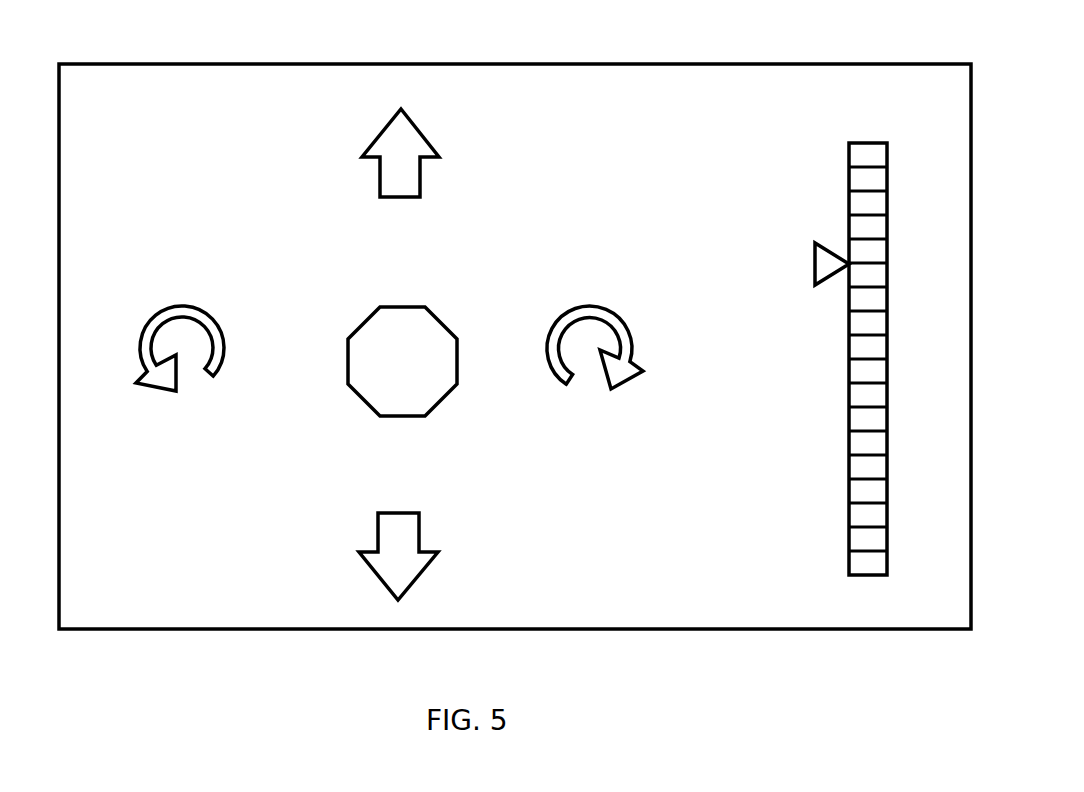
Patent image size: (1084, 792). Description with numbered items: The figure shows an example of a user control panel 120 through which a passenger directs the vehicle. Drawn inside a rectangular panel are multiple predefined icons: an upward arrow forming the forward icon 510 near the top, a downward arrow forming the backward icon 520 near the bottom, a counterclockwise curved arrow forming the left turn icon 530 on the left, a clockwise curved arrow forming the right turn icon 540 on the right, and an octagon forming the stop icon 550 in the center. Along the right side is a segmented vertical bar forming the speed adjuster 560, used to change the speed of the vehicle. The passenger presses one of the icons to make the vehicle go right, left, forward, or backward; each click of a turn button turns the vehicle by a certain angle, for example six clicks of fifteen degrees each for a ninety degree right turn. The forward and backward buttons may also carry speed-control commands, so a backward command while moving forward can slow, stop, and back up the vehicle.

The user control panel 120 is at (832, 63).
The forward icon 510 is at (446, 172).
The backward icon 520 is at (437, 538).
The left turn icon 530 is at (158, 400).
The right turn icon 540 is at (630, 387).
The stop icon 550 is at (442, 308).
The speed adjuster 560 is at (897, 317).